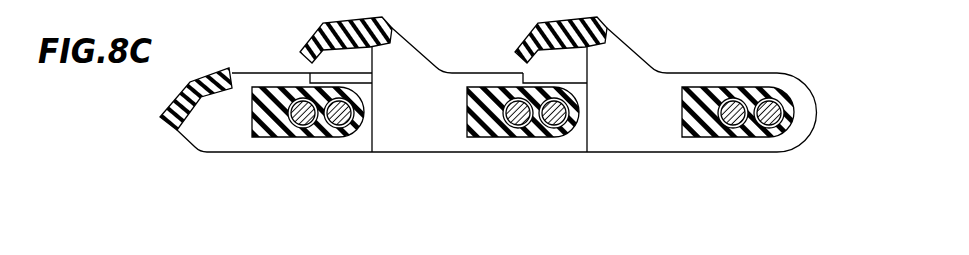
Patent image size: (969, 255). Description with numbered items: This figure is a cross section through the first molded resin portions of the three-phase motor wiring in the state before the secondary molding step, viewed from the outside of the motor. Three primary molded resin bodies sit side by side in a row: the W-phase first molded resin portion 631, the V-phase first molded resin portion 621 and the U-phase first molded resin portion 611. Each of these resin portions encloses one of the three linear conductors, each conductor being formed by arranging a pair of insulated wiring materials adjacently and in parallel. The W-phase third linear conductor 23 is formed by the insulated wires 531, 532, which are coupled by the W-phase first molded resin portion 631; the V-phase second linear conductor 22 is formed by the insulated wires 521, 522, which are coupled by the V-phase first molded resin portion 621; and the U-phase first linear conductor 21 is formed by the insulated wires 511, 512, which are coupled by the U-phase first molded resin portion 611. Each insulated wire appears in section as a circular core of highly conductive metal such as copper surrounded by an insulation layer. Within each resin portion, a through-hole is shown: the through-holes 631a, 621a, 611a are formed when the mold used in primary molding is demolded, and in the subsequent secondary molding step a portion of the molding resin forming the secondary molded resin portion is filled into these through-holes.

The W-phase first molded resin portion 631 is at (257, 72).
The V-phase first molded resin portion 621 is at (483, 72).
The U-phase first molded resin portion 611 is at (712, 72).
The through-hole 631a is at (230, 132).
The through-hole 621a is at (443, 132).
The through-hole 611a is at (643, 127).
The insulated wire 532 is at (304, 119).
The insulated wire 531 is at (336, 119).
The insulated wire 522 is at (519, 119).
The insulated wire 521 is at (551, 119).
The insulated wire 512 is at (735, 119).
The insulated wire 511 is at (766, 119).
The third linear conductor 23 is at (308, 162).
The second linear conductor 22 is at (523, 162).
The first linear conductor 21 is at (738, 162).